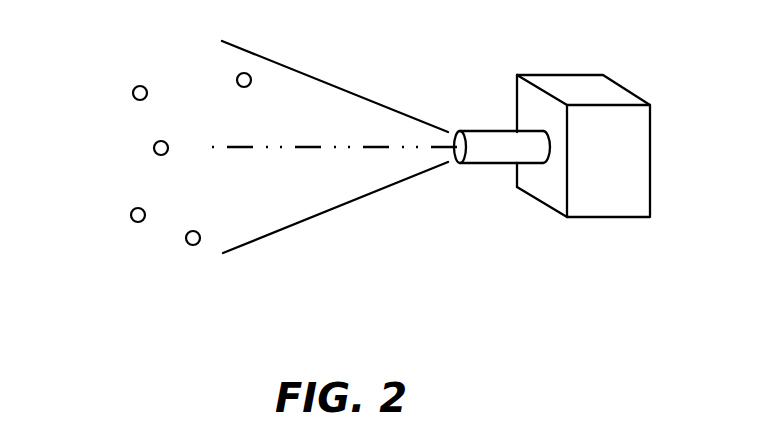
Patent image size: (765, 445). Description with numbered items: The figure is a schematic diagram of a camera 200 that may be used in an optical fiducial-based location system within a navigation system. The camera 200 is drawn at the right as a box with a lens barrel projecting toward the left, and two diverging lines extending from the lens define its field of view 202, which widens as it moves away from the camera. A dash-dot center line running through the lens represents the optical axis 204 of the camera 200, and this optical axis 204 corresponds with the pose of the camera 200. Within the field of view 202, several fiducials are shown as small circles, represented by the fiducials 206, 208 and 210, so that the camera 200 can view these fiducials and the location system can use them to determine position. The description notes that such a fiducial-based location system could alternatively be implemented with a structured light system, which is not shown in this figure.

The camera 200 is at (607, 217).
The field of view 202 is at (313, 216).
The optical axis 204 is at (313, 147).
The fiducial 206 is at (137, 85).
The fiducial 208 is at (152, 145).
The fiducial 210 is at (187, 243).